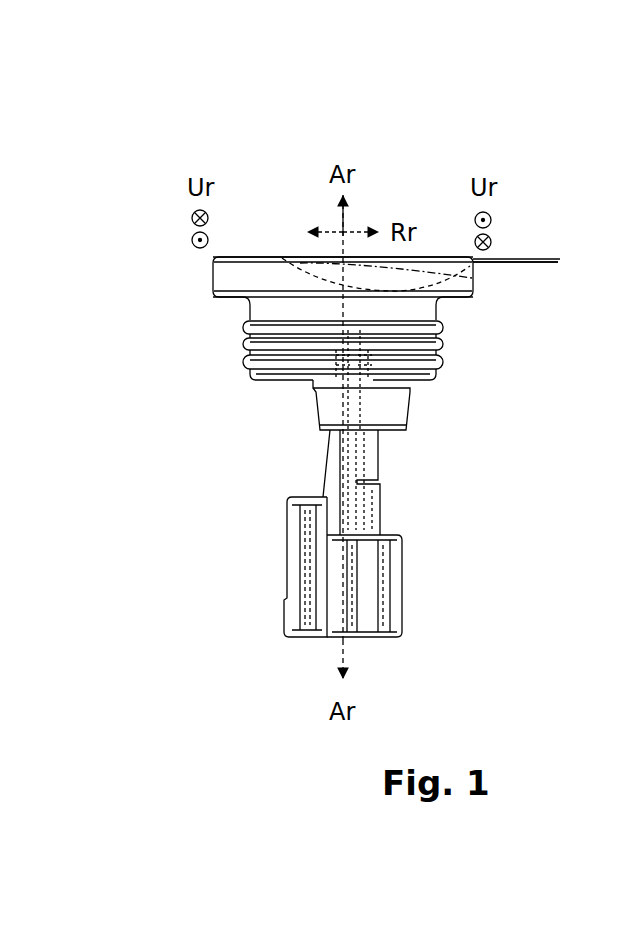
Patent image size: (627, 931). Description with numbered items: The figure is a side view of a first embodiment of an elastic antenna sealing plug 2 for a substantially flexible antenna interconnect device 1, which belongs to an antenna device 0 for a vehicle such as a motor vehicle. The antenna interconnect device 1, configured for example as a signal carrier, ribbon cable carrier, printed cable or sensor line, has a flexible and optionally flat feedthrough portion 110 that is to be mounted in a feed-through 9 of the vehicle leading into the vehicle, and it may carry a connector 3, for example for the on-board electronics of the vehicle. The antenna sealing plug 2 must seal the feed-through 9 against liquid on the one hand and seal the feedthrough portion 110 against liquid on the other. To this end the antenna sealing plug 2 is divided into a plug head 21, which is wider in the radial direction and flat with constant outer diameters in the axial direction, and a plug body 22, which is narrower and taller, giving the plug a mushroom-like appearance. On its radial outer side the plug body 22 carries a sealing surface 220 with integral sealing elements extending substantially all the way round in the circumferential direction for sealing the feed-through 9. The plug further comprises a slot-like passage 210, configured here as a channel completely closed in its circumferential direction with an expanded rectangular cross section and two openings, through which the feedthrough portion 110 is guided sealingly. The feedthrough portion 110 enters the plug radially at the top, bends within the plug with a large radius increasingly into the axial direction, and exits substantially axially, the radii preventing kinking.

The antenna device 0 is at (179, 111).
The antenna interconnect device 1 is at (554, 268).
The feedthrough portion 110 is at (476, 289).
The antenna sealing plug 2 is at (177, 329).
The plug head 21 is at (191, 255).
The slot-like passage 210 is at (282, 256).
The plug body 22 is at (213, 305).
The sealing surface 220 is at (300, 345).
The feed-through 9 is at (452, 419).
The connector 3 is at (271, 586).